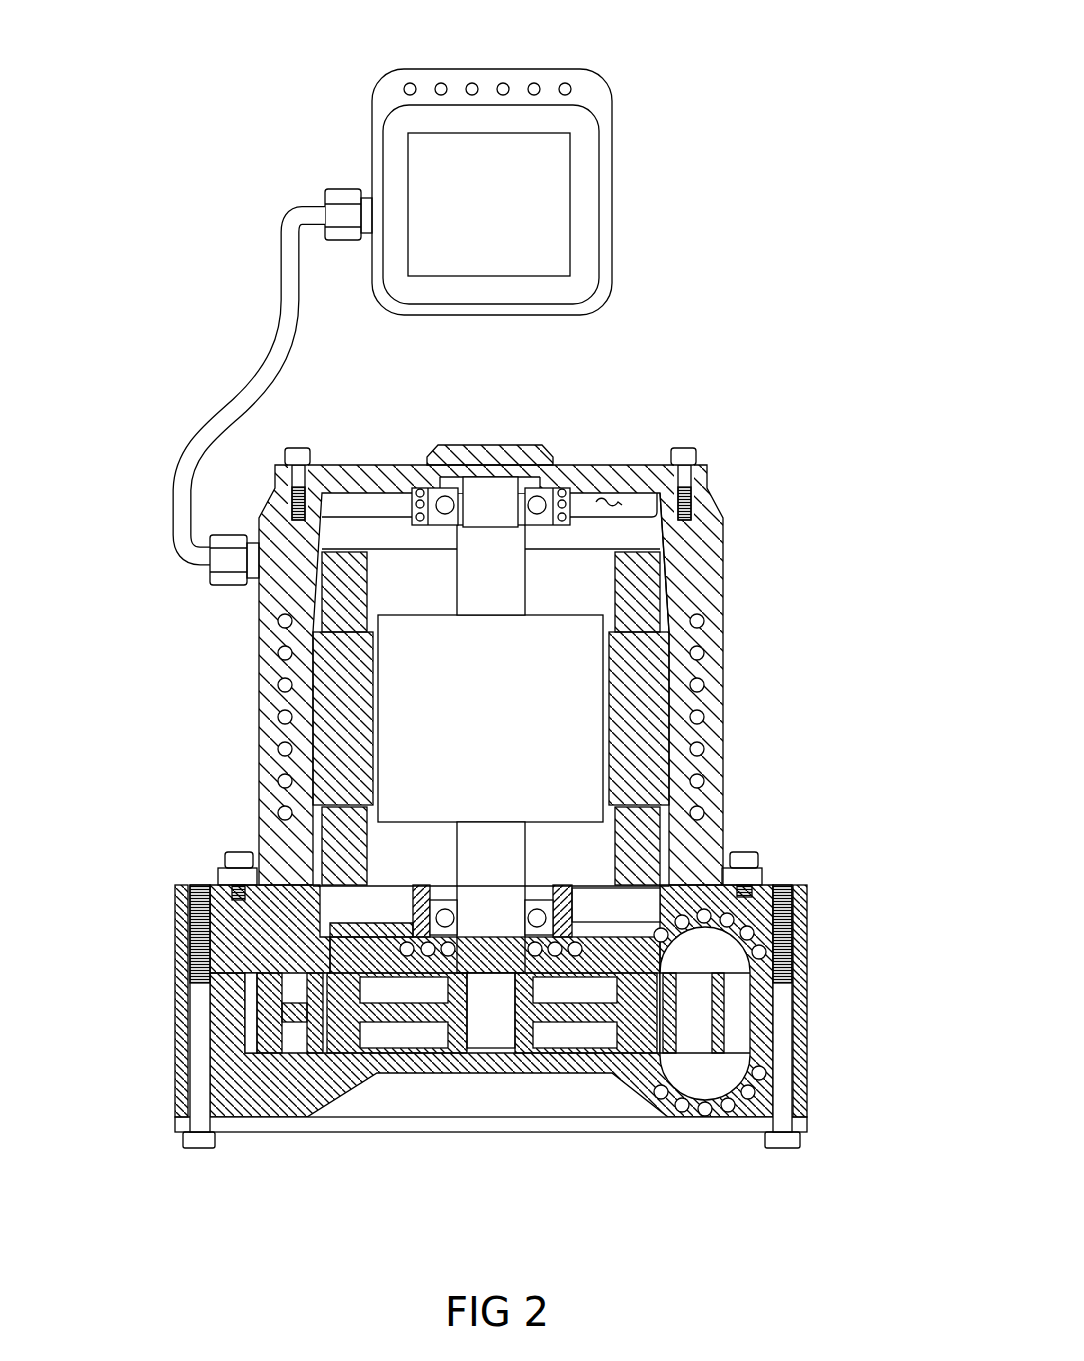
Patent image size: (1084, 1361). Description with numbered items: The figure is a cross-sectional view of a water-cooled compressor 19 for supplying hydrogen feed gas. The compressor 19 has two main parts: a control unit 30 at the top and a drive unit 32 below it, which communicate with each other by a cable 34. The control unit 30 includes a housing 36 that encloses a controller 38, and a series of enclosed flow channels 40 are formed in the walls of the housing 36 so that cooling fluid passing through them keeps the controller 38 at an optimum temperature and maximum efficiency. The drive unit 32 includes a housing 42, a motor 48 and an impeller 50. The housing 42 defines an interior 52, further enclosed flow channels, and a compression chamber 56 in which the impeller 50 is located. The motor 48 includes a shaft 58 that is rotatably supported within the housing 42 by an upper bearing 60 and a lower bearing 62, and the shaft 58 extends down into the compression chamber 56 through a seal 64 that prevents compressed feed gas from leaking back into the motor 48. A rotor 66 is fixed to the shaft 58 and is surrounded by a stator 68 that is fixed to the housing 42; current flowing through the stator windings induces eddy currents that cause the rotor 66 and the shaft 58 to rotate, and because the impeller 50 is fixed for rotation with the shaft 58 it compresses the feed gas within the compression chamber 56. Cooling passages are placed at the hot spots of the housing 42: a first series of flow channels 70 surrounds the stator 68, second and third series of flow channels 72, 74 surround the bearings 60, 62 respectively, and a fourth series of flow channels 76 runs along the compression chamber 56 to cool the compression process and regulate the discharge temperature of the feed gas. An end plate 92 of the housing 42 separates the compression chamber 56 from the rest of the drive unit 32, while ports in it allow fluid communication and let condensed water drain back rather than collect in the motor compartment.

The compressor 19 is at (752, 338).
The control unit 30 is at (597, 95).
The drive unit 32 is at (729, 554).
The cable 34 is at (195, 418).
The housing 36 is at (604, 196).
The controller 38 is at (555, 249).
The flow channels 40 is at (472, 85).
The housing 42 is at (718, 497).
The motor 48 is at (662, 617).
The impeller 50 is at (662, 1047).
The interior 52 is at (612, 499).
The compression chamber 56 is at (565, 1053).
The shaft 58 is at (500, 492).
The bearing 60 is at (550, 488).
The bearing 62 is at (560, 897).
The seal 64 is at (437, 1022).
The rotor 66 is at (614, 826).
The stator 68 is at (654, 744).
The first series of flow channels 70 is at (278, 780).
The second series of flow channels 72 is at (418, 492).
The third series of flow channels 74 is at (408, 940).
The fourth series of flow channels 76 is at (716, 851).
The end plate 92 is at (176, 905).